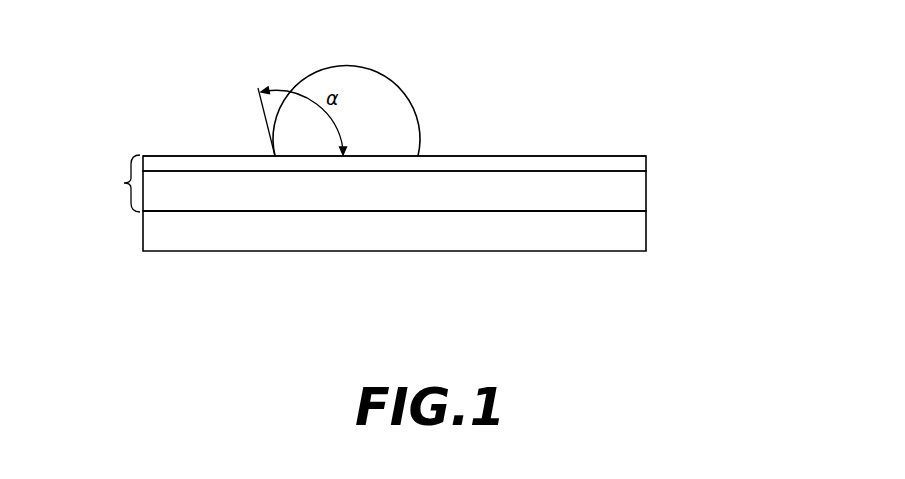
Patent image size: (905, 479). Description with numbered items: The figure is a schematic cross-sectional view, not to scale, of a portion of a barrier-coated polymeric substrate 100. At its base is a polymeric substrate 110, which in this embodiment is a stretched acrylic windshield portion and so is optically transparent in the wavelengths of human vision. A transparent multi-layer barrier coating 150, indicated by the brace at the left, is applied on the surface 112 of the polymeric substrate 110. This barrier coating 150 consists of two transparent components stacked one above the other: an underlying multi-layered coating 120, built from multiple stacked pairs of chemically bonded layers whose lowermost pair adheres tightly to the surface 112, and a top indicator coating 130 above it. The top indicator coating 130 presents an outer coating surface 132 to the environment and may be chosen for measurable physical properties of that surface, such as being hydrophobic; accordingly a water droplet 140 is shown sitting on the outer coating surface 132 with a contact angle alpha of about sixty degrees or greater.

The barrier-coated polymeric substrate 100 is at (462, 183).
The polymeric substrate 110 is at (646, 241).
The surface of the polymeric substrate 112 is at (582, 210).
The multi-layered coating 120 is at (646, 187).
The top indicator coating 130 is at (646, 162).
The outer coating surface 132 is at (507, 156).
The water droplet 140 is at (403, 90).
The transparent barrier coating 150 is at (109, 183).